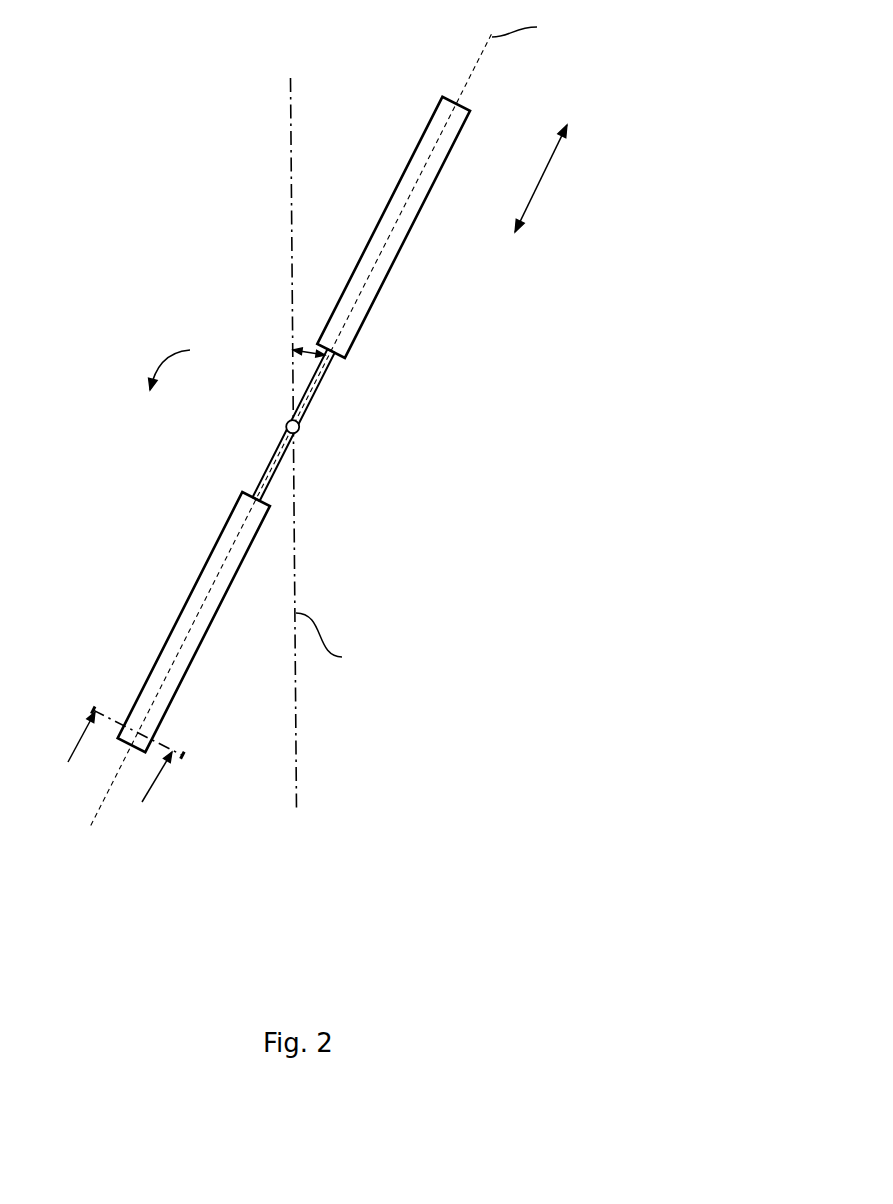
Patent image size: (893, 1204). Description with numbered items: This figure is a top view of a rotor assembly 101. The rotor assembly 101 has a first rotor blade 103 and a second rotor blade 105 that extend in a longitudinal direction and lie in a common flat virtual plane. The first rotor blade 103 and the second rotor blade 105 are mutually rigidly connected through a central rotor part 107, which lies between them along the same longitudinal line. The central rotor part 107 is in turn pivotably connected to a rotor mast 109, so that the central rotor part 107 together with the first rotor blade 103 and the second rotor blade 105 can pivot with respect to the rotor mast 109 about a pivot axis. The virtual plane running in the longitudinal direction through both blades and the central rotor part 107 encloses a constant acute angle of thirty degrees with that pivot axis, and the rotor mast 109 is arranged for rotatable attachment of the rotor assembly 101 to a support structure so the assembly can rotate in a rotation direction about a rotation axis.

The rotor assembly 101 is at (118, 175).
The first rotor blade 103 is at (190, 595).
The second rotor blade 105 is at (413, 152).
The central rotor part 107 is at (323, 383).
The rotor mast 109 is at (303, 429).